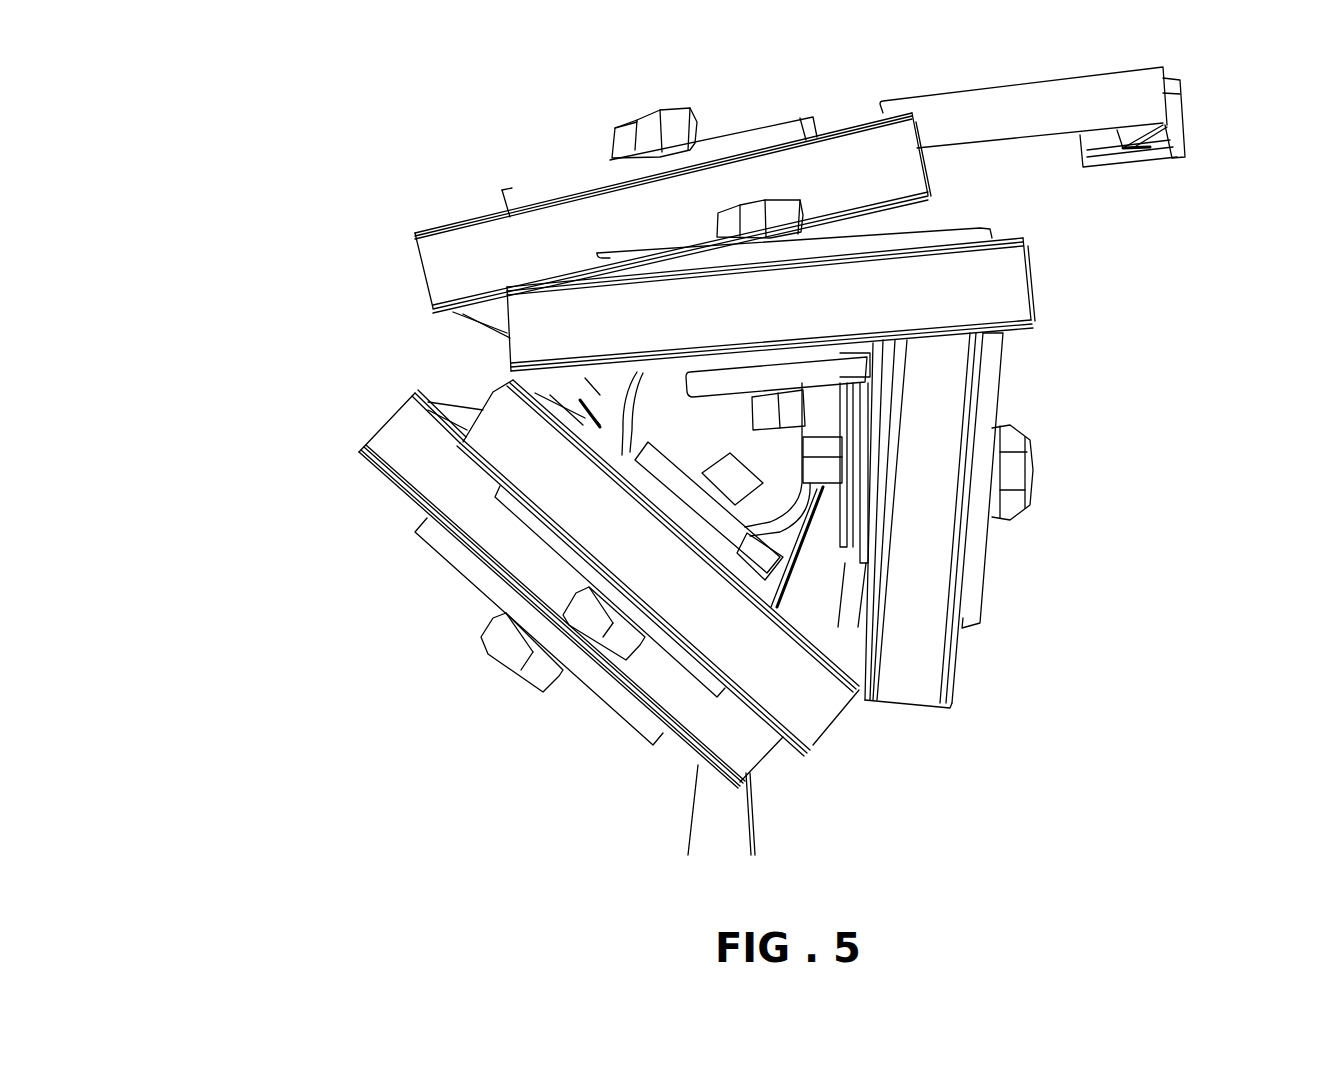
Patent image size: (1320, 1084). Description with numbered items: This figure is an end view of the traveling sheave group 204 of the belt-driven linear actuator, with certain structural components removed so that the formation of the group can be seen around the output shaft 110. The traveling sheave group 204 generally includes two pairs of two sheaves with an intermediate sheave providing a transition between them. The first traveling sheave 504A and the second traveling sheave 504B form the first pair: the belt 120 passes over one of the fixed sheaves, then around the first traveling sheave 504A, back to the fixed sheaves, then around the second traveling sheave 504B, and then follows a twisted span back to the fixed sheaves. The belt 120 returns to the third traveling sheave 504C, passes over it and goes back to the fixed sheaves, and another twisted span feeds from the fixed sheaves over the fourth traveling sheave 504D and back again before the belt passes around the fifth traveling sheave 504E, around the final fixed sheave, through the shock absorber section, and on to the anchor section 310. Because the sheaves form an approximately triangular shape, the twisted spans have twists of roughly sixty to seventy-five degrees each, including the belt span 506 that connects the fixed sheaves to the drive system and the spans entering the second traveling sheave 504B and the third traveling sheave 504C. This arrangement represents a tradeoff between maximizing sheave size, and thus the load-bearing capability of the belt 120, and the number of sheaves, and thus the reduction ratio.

The output shaft 110 is at (660, 415).
The belt 120 is at (747, 842).
The traveling sheave group 204 is at (336, 706).
The anchor section 310 is at (1183, 130).
The traveling sheave 1 504A is at (393, 430).
The traveling sheave 2 504B is at (810, 705).
The traveling sheave 3 504C is at (913, 690).
The traveling sheave 4 504D is at (1003, 300).
The traveling sheave 5 504E is at (445, 255).
The belt span 506 is at (717, 810).